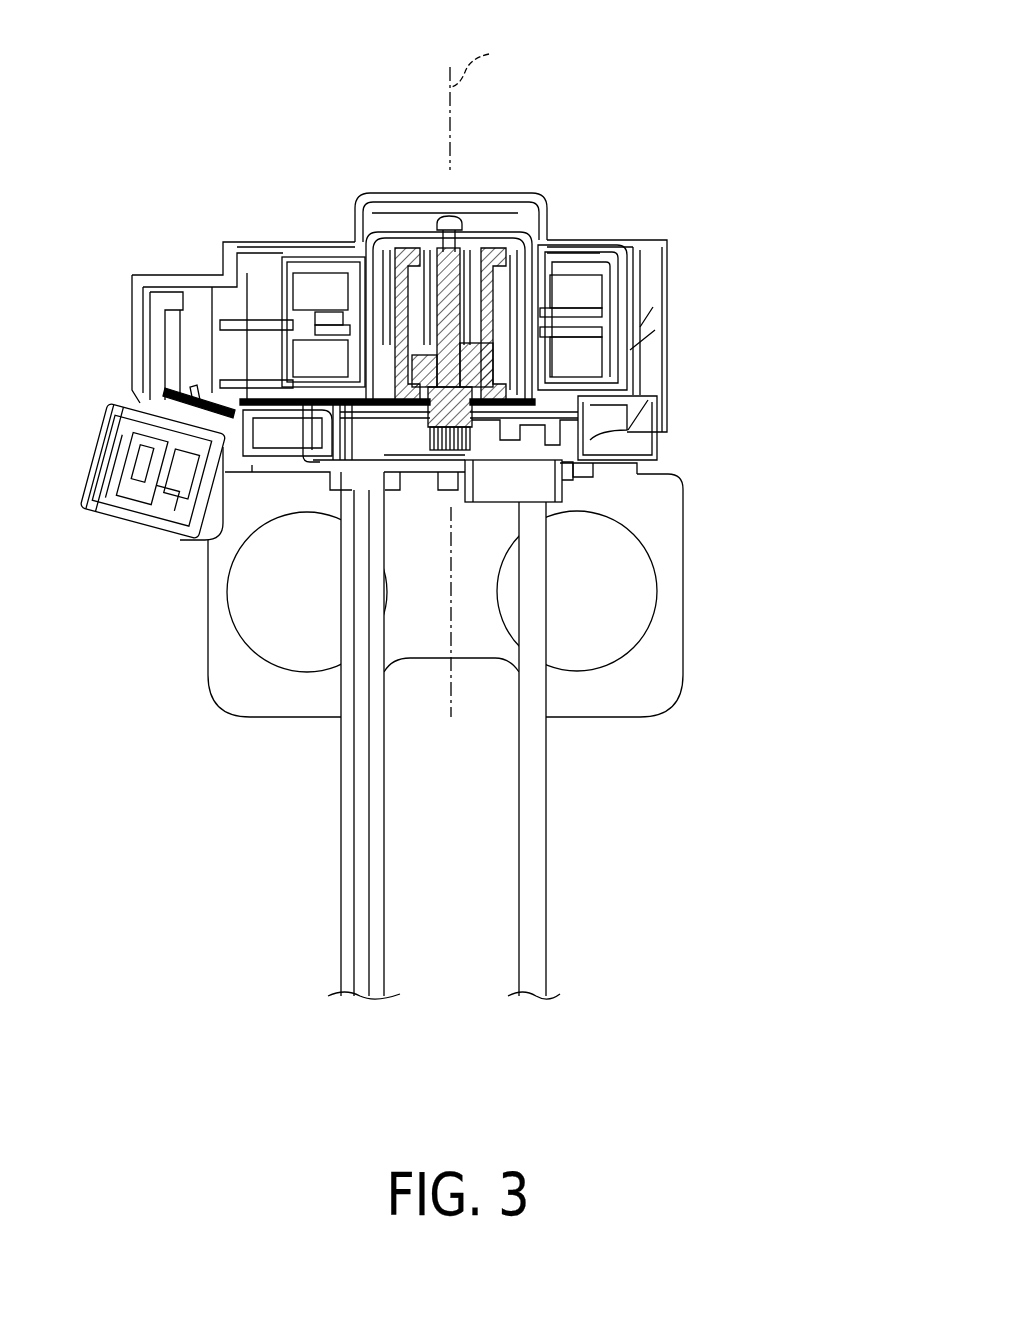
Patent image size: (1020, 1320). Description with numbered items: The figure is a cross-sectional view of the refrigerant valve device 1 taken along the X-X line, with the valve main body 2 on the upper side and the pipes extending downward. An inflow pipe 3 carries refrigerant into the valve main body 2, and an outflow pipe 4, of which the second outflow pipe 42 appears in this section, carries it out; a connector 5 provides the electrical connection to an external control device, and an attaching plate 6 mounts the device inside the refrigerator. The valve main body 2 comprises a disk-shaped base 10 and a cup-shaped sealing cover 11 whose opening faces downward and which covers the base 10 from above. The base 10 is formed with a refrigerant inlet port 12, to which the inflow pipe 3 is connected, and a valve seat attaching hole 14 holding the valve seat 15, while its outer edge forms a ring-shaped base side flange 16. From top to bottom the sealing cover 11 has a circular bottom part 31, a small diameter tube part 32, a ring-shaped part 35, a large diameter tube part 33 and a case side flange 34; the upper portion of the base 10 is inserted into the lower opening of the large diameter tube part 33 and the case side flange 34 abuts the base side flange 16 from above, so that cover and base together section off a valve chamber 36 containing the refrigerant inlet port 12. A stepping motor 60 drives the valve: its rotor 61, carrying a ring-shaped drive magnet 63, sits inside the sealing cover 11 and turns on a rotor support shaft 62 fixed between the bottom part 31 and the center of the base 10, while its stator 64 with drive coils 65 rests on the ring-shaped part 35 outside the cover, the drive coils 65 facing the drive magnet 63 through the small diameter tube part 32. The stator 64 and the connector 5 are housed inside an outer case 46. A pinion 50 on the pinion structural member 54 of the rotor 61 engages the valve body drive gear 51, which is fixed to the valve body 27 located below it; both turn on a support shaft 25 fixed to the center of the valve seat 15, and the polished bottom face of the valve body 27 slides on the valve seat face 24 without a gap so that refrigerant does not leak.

The refrigerant valve device 1 is at (130, 51).
The valve main body 2 is at (663, 226).
The inflow pipe 3 is at (343, 948).
The outflow pipe 4 is at (591, 750).
The connector 5 is at (148, 495).
The attaching plate 6 is at (648, 697).
The base 10 is at (550, 495).
The sealing cover 11 is at (540, 215).
The refrigerant inlet port 12 is at (320, 472).
The valve seat attaching hole 14 is at (575, 473).
The valve seat 15 is at (560, 510).
The base side flange 16 is at (317, 490).
The valve seat face 24 is at (587, 460).
The support shaft 25 is at (512, 397).
The valve body 27 is at (565, 438).
The bottom part 31 is at (412, 233).
The small diameter tube part 32 is at (310, 290).
The large diameter tube part 33 is at (318, 452).
The case side flange 34 is at (317, 470).
The ring-shaped part 35 is at (337, 402).
The valve chamber 36 is at (404, 448).
The second outflow pipe 42 is at (540, 948).
The outer case 46 is at (580, 240).
The pinion 50 is at (457, 432).
The valve body drive gear 51 is at (527, 437).
The pinion structural member 54 is at (445, 392).
The stepping motor 60 is at (744, 248).
The rotor 61 is at (517, 322).
The rotor support shaft 62 is at (447, 216).
The drive magnet 63 is at (363, 292).
The stator 64 is at (583, 353).
The drive coils 65 is at (385, 330).